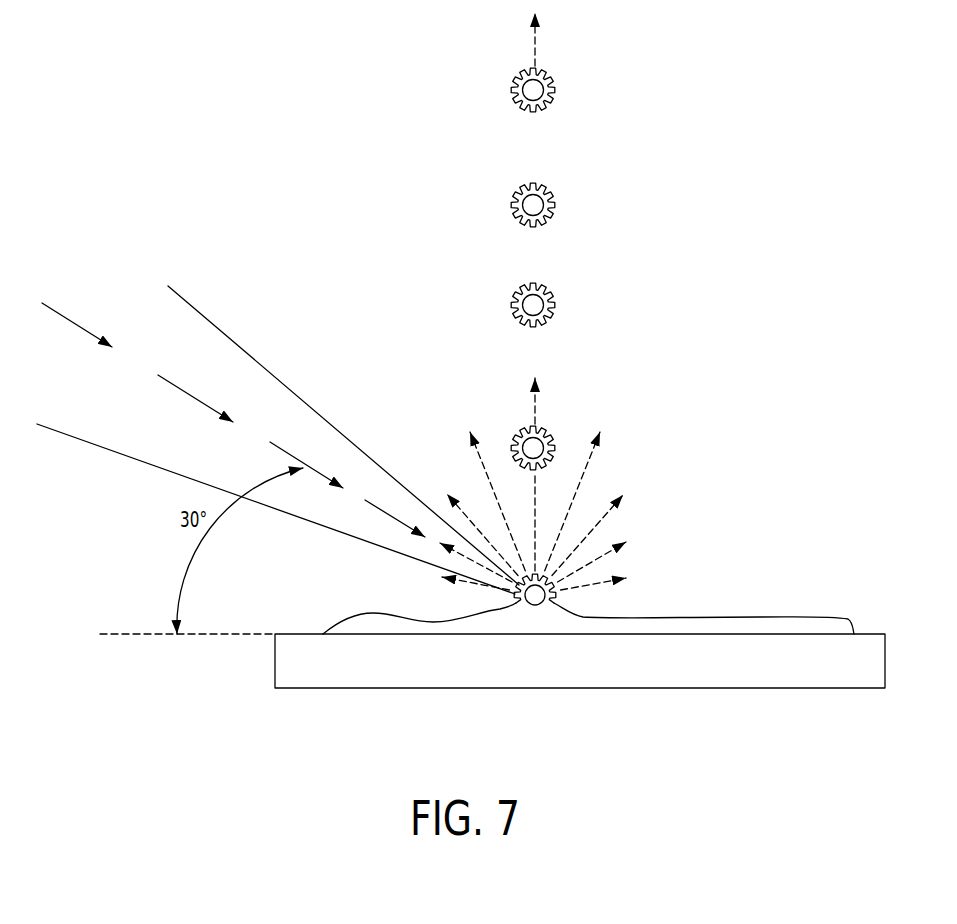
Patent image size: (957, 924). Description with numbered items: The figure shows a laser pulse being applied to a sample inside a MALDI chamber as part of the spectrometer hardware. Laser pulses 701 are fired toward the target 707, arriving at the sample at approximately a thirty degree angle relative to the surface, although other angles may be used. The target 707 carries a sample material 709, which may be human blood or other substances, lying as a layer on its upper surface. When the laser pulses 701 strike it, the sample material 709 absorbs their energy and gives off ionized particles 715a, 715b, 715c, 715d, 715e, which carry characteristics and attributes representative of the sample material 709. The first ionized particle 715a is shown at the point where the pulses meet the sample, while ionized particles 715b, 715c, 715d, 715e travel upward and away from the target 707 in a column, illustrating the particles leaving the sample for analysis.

The laser pulses 701 is at (77, 323).
The target 707 is at (495, 688).
The sample material 709 is at (818, 617).
The ionized particle 715a is at (550, 600).
The ionized particle 715b is at (558, 447).
The ionized particle 715c is at (557, 308).
The ionized particle 715d is at (557, 208).
The ionized particle 715e is at (557, 88).